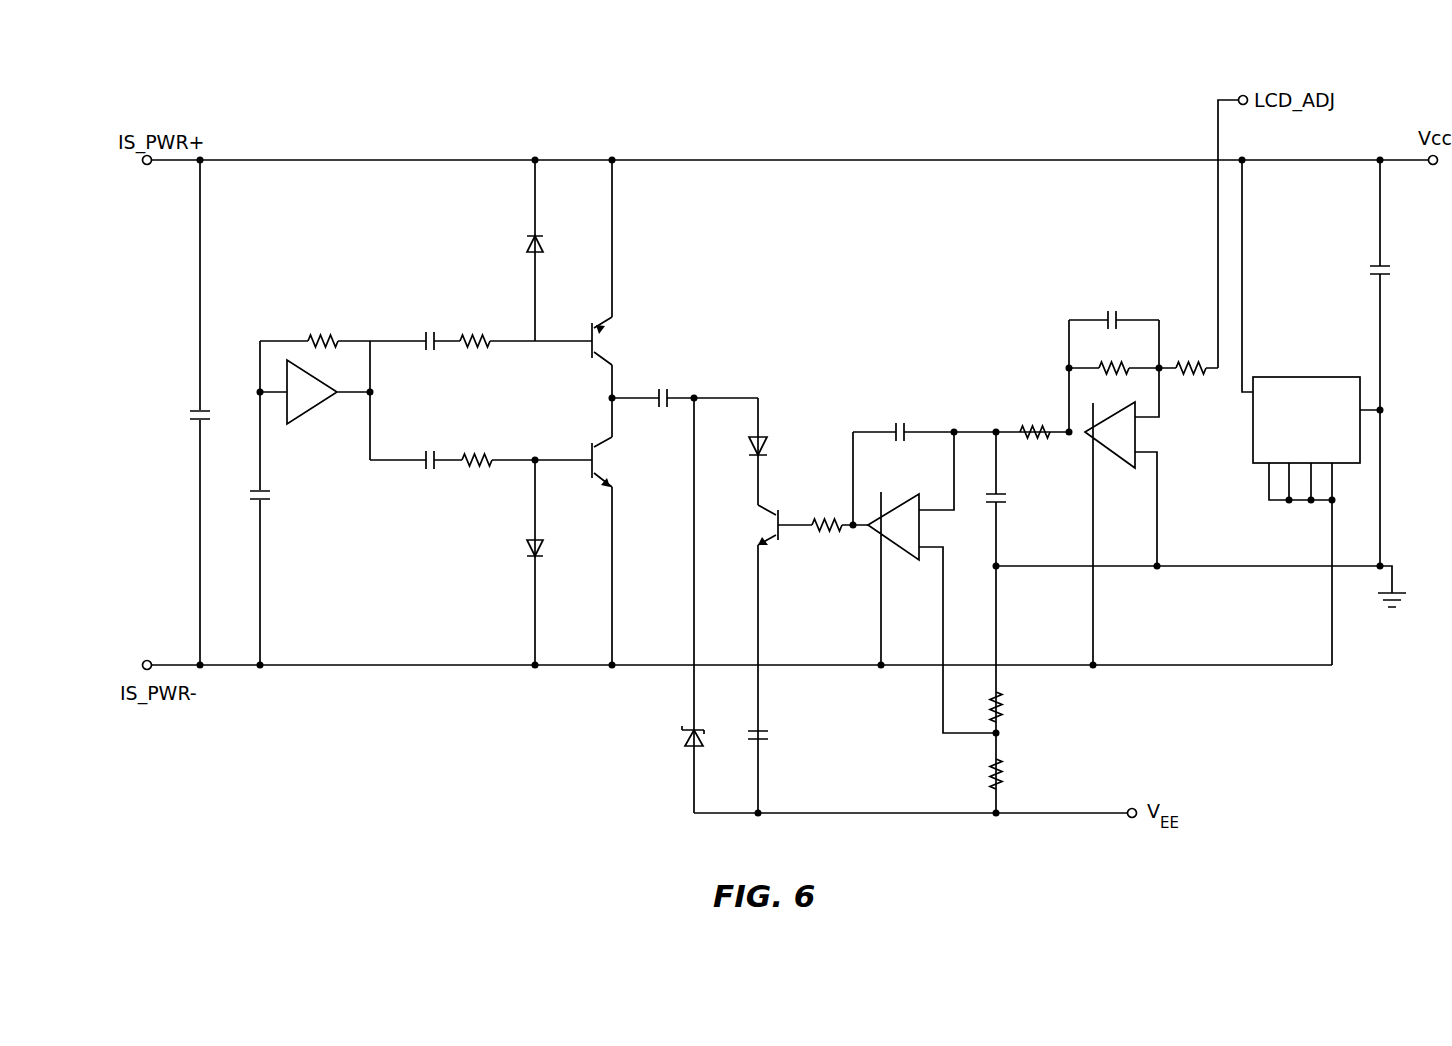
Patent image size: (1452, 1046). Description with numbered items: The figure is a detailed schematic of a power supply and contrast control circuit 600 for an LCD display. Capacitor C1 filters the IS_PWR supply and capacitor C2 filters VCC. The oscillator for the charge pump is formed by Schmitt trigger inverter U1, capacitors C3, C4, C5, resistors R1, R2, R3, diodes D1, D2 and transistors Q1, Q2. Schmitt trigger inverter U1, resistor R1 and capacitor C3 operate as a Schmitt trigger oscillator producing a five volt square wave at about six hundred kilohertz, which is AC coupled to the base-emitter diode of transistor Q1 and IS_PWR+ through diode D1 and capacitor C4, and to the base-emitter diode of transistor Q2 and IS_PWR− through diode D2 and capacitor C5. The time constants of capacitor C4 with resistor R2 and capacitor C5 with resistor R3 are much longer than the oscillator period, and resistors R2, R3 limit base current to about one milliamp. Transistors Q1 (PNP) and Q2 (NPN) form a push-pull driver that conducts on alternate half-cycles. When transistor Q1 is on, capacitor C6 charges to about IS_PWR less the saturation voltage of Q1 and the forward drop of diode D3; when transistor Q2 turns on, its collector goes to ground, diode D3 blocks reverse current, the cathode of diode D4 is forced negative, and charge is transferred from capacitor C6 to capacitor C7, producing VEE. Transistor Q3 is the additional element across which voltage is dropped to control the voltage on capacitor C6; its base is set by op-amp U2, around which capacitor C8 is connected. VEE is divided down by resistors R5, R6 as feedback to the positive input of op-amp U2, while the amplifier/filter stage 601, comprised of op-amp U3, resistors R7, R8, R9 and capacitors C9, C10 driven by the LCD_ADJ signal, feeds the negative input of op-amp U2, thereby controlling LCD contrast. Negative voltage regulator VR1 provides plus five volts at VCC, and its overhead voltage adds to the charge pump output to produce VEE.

The power supply and contrast control circuit 600 is at (695, 130).
The amplifier/filter stage 601 is at (1000, 352).
The capacitor C1 is at (214, 415).
The capacitor C2 is at (1393, 365).
The capacitor C3 is at (273, 503).
The capacitor C4 is at (415, 357).
The capacitor C5 is at (416, 476).
The capacitor C6 is at (684, 384).
The capacitor C7 is at (774, 770).
The capacitor C8 is at (963, 419).
The capacitor C9 is at (1010, 624).
The capacitor C10 is at (1114, 326).
The resistor R1 is at (315, 328).
The resistor R2 is at (526, 328).
The resistor R3 is at (527, 447).
The resistor R5 is at (1010, 707).
The resistor R6 is at (1010, 774).
The resistor R7 is at (1035, 419).
The resistor R8 is at (1114, 356).
The resistor R9 is at (998, 434).
The diode D1 is at (553, 250).
The diode D2 is at (553, 562).
The diode D3 is at (776, 451).
The diode D4 is at (674, 605).
The transistor Q1 is at (618, 341).
The transistor Q2 is at (618, 462).
The transistor Q3 is at (756, 649).
The Schmitt trigger inverter U1 is at (315, 400).
The op-amp U2 is at (924, 582).
The op-amp U3 is at (1114, 492).
The negative voltage regulator VR1 is at (1305, 412).